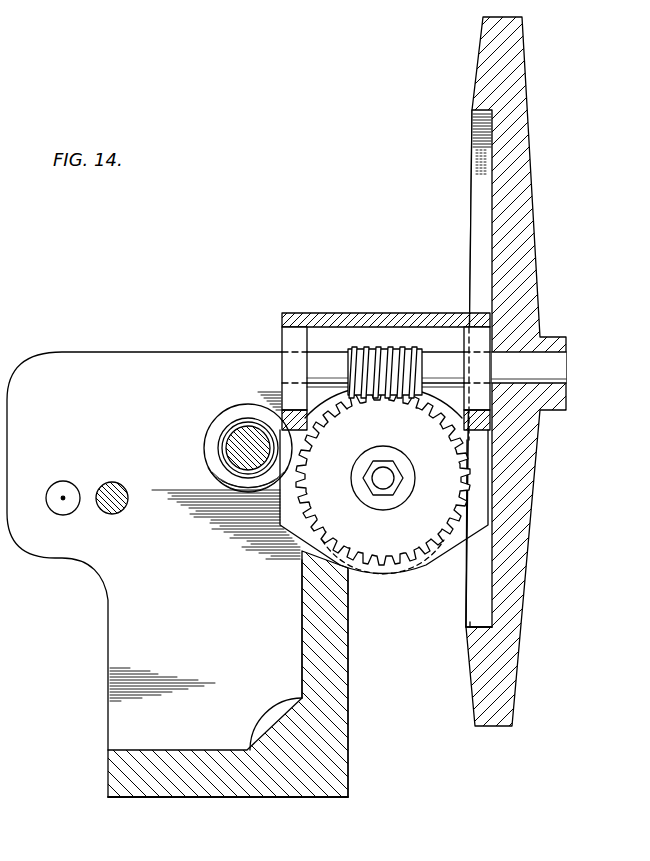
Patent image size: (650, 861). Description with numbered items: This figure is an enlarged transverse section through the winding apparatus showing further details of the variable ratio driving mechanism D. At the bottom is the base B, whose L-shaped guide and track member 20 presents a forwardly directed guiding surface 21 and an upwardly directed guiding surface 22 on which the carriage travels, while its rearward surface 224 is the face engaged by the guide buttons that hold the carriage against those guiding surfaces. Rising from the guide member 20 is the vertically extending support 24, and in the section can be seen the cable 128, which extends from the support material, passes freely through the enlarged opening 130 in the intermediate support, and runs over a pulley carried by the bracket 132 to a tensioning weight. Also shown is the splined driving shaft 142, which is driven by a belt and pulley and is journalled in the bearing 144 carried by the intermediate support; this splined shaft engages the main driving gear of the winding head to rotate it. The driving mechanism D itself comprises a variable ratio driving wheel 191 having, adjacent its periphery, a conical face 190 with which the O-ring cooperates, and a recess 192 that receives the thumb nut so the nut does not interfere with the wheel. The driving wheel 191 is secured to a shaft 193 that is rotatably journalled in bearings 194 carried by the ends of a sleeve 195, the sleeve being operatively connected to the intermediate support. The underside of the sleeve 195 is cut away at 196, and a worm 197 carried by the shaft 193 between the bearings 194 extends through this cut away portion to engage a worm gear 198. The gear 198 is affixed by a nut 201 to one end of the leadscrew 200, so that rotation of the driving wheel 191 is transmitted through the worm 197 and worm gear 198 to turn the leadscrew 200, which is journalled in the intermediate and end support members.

The guide and track member 20 is at (350, 741).
The forwardly directed guiding surface 21 is at (108, 768).
The upwardly directed guiding surface 22 is at (300, 553).
The vertically extending support 24 is at (180, 352).
The cable 128 is at (64, 492).
The enlarged opening 130 is at (64, 502).
The bracket 132 is at (113, 482).
The splined driving shaft 142 is at (238, 445).
The bearing 144 is at (214, 425).
The conical face 190 is at (468, 648).
The variable ratio driving wheel 191 is at (528, 493).
The recess 192 is at (466, 626).
The shaft 193 is at (330, 362).
The bearings 194 is at (296, 332).
The sleeve 195 is at (405, 312).
The cut away portion 196 is at (332, 426).
The worm 197 is at (378, 348).
The worm gear 198 is at (383, 494).
The leadscrew 200 is at (383, 466).
The nut 201 is at (384, 490).
The rearward surface 224 is at (349, 614).
The base B is at (290, 800).
The variable ratio driving mechanism D is at (422, 190).